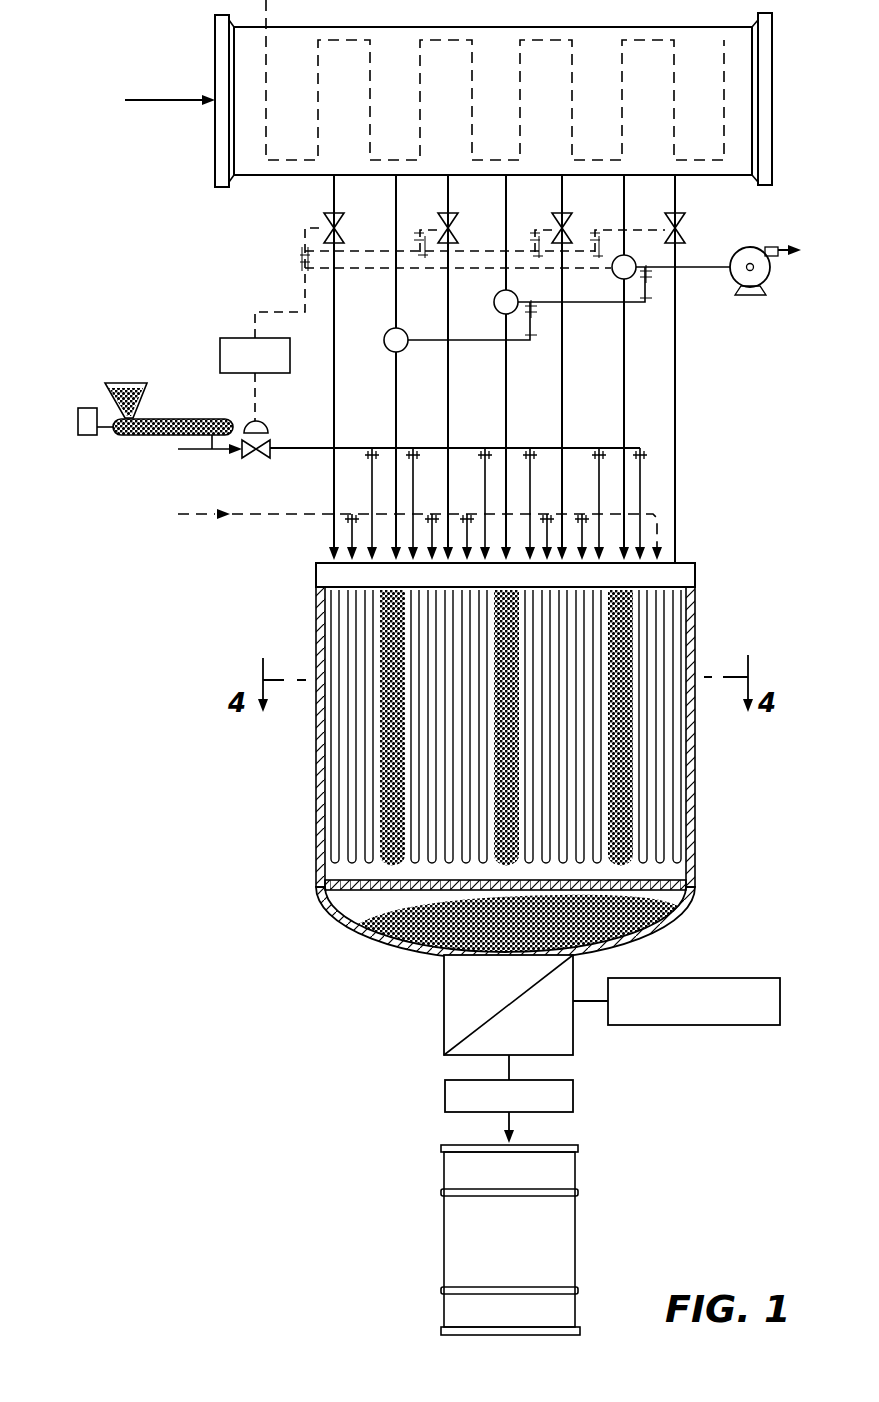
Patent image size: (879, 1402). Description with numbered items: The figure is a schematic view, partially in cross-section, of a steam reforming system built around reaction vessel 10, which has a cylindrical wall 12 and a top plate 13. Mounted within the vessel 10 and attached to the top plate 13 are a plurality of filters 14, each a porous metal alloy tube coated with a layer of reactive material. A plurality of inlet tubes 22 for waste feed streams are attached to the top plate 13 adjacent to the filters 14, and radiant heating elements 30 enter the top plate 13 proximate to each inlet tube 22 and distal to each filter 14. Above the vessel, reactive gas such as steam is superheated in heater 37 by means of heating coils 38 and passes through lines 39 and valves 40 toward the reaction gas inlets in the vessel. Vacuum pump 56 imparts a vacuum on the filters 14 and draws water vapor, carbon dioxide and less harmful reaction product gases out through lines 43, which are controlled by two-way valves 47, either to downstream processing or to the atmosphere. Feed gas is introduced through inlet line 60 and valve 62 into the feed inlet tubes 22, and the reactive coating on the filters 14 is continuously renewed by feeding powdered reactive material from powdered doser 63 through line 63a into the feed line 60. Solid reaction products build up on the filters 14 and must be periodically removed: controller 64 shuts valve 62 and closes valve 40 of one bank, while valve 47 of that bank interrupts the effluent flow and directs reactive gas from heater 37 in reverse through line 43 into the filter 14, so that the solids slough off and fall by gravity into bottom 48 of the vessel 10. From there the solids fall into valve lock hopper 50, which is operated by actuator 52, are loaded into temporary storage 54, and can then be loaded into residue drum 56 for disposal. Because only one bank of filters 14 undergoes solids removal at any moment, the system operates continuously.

The reaction vessel 10 is at (768, 771).
The cylindrical wall 12 is at (317, 803).
The top plate 13 is at (695, 563).
The filters 14 is at (615, 875).
The inlet tubes 22 is at (413, 470).
The radiant heating elements 30 is at (352, 531).
The heater 37 is at (775, 88).
The heating coils 38 is at (268, 160).
The lines 39 is at (333, 412).
The valves 40 is at (330, 216).
The lines 43 is at (396, 408).
The two-way valves 47 is at (387, 336).
The bottom 48 is at (612, 940).
The valve lock hopper 50 is at (444, 997).
The actuator 52 is at (745, 978).
The temporary storage 54 is at (573, 1098).
The vacuum pump / residue drum 56 is at (772, 276).
The inlet line 60 is at (198, 454).
The valve 62 is at (256, 460).
The powdered doser 63 is at (85, 412).
The line 63a is at (212, 440).
The controller 64 is at (220, 362).